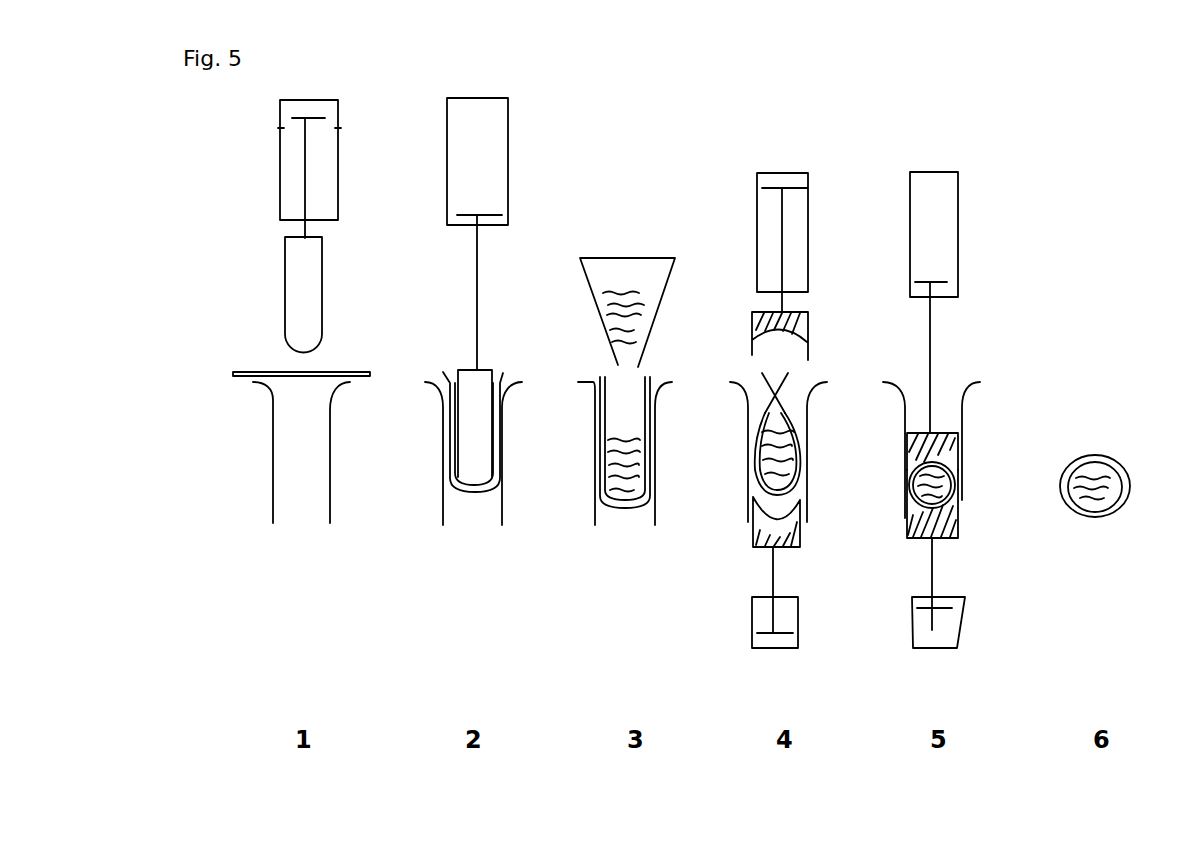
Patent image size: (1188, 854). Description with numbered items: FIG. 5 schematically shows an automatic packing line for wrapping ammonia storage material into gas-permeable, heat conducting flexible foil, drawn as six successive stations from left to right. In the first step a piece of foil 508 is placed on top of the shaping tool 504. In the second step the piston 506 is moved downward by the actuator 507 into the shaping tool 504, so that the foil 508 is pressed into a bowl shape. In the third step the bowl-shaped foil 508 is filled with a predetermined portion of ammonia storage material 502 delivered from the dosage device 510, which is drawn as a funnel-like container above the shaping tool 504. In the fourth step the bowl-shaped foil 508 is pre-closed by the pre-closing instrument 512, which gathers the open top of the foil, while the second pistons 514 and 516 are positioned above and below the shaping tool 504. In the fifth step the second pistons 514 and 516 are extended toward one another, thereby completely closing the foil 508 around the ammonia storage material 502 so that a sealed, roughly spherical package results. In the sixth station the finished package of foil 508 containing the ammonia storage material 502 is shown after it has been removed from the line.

The ammonia storage material 502 is at (620, 462).
The shaping tool 504 is at (273, 425).
The piston 506 is at (453, 372).
The actuator 507 is at (445, 153).
The foil 508 is at (455, 407).
The dosage device 510 is at (634, 248).
The pre-closing instrument 512 is at (780, 403).
The second piston 514 is at (762, 317).
The second piston 516 is at (753, 527).